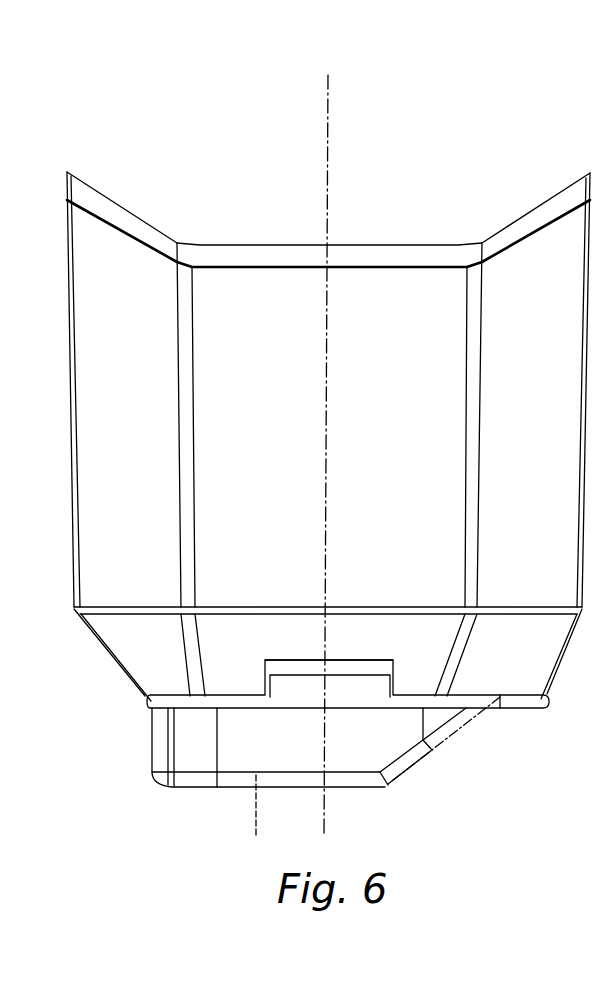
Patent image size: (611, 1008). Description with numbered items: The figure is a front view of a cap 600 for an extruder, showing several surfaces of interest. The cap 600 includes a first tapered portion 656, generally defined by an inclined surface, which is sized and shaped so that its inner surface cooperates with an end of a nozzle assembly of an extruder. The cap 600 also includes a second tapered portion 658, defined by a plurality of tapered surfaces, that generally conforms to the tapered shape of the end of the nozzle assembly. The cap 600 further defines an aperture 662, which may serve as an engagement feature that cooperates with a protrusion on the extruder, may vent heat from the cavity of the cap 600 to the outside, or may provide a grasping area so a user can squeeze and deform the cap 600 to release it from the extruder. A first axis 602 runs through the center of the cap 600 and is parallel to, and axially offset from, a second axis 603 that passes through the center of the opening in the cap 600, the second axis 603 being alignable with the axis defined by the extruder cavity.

The cap 600 is at (110, 104).
The first axis 602 is at (330, 110).
The second axis 603 is at (256, 818).
The first tapered portion 656 is at (420, 763).
The second tapered portion 658 is at (527, 662).
The aperture 662 is at (349, 667).